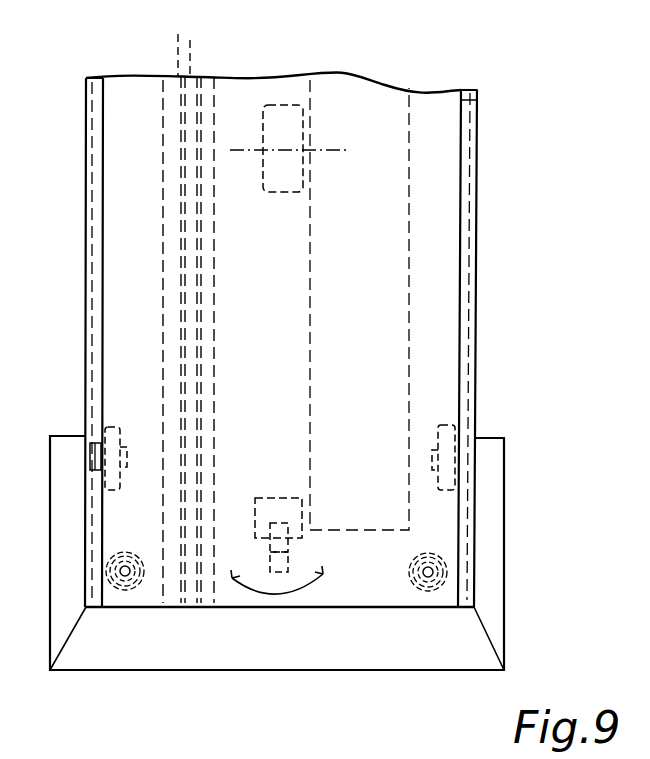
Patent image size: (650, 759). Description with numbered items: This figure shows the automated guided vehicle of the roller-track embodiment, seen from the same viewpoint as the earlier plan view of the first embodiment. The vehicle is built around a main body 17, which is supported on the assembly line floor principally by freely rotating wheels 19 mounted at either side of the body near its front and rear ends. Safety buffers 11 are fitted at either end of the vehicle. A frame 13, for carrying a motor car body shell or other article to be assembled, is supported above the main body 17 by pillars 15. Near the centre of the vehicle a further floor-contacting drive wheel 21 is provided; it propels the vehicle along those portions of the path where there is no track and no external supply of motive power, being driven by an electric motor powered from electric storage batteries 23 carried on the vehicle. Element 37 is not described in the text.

The safety buffer 11 is at (505, 547).
The frame 13 is at (463, 101).
The pillar 15 is at (417, 588).
The main body 17 is at (477, 143).
The freely rotating wheel 19 is at (112, 427).
The drive wheel 21 is at (264, 104).
The electric storage battery 23 is at (350, 95).
The guide rod 37 is at (178, 32).